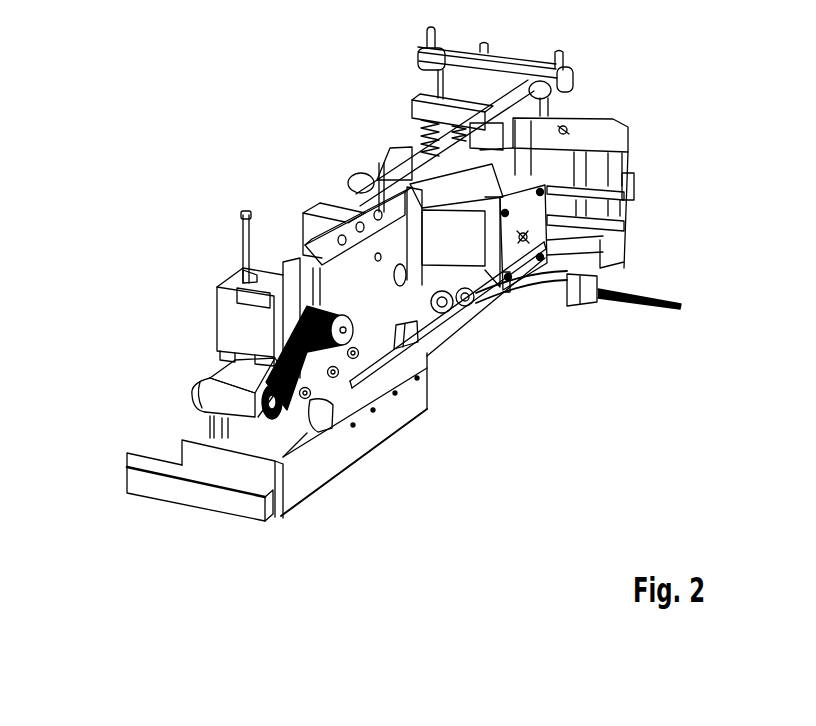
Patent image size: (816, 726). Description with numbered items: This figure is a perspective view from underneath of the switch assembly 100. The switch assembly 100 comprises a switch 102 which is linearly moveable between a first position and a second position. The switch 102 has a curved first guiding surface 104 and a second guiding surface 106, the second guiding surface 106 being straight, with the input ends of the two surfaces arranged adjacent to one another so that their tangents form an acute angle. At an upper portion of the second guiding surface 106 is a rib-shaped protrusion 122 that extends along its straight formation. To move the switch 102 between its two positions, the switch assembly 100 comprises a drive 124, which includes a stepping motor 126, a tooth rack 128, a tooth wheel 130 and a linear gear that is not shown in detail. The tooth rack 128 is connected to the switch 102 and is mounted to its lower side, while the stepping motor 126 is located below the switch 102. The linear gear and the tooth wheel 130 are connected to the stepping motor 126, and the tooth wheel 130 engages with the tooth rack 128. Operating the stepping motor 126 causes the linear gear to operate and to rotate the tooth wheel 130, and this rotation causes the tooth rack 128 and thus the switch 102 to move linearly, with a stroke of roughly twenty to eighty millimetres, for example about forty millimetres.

The switch assembly 100 is at (192, 152).
The switch 102 is at (348, 442).
The curved first guiding surface 104 is at (197, 439).
The second guiding surface 106 is at (155, 495).
The rib-shaped protrusion 122 is at (200, 497).
The drive 124 is at (203, 318).
The stepping motor 126 is at (230, 330).
The tooth rack 128 is at (337, 367).
The tooth wheel 130 is at (353, 322).